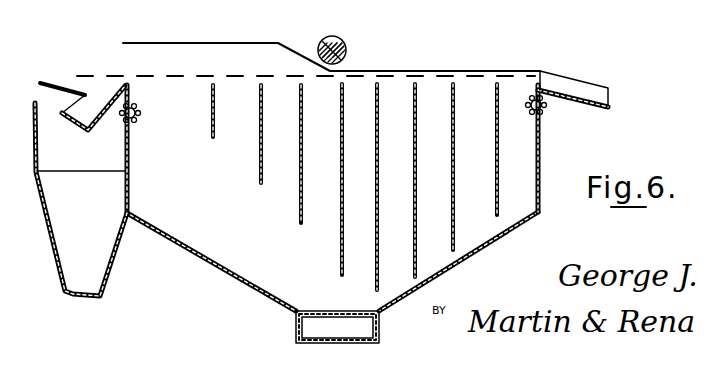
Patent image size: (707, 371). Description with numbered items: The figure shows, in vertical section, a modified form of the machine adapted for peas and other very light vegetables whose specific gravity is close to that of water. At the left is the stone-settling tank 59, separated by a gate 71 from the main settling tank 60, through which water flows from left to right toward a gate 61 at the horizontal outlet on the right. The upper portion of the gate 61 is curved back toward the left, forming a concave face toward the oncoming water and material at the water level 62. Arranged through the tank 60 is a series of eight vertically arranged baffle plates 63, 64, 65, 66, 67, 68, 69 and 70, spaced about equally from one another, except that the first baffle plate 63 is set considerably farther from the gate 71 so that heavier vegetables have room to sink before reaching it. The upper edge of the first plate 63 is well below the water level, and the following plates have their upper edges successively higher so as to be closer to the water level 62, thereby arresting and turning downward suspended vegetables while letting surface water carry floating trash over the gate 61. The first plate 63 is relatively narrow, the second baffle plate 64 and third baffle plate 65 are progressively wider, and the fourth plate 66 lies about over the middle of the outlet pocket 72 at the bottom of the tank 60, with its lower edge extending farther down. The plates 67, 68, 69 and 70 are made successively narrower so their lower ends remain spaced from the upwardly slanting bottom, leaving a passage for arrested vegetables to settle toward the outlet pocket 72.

The stone-settling tank 59 is at (81, 199).
The main settling tank 60 is at (332, 198).
The gate 61 is at (528, 86).
The water level 62 is at (410, 77).
The first baffle plate 63 is at (211, 117).
The second baffle plate 64 is at (260, 118).
The third baffle plate 65 is at (300, 133).
The fourth baffle plate 66 is at (340, 160).
The fifth baffle plate 67 is at (376, 172).
The sixth baffle plate 68 is at (413, 178).
The seventh baffle plate 69 is at (452, 170).
The eighth baffle plate 70 is at (496, 168).
The gate 71 is at (113, 107).
The outlet pocket 72 is at (315, 328).